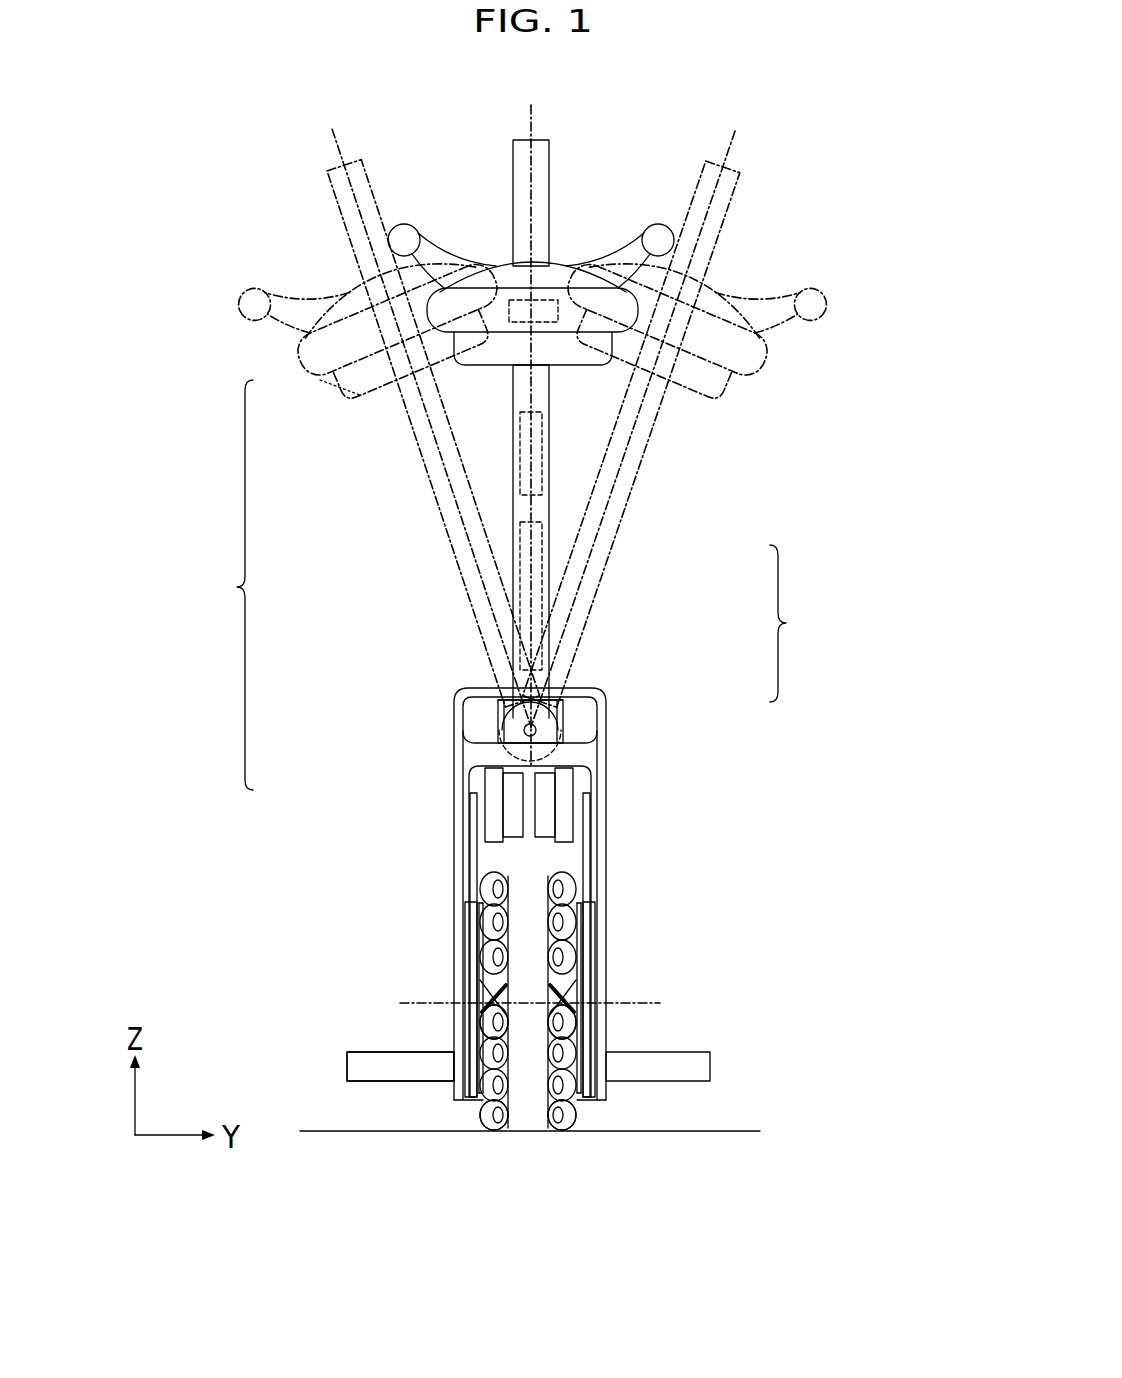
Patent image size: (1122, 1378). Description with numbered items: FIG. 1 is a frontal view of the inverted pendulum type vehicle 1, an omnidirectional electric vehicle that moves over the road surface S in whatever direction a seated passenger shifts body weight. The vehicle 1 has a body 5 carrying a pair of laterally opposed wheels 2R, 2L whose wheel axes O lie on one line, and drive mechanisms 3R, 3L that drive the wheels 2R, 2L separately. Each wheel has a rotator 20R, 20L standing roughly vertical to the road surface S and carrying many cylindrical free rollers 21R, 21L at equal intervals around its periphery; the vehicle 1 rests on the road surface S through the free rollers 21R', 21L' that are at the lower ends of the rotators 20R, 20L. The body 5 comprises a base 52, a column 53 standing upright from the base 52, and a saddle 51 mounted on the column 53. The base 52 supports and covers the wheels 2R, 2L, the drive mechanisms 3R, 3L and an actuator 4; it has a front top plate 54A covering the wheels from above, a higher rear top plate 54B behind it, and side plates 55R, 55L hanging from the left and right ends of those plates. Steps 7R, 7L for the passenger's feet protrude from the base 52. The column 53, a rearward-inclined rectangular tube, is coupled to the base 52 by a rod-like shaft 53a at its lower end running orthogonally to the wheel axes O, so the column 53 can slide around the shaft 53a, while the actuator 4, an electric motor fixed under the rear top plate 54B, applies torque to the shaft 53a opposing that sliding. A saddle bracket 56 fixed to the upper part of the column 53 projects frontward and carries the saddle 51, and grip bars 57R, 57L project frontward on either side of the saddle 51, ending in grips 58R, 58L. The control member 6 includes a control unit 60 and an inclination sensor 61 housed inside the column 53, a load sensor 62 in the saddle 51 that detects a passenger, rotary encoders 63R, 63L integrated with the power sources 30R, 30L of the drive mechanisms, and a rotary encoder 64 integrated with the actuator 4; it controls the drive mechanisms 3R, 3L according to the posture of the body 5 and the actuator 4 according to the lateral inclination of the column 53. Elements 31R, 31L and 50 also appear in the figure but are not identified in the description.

The vehicle 1 is at (236, 175).
The wheel 2R is at (493, 1135).
The wheel 2L is at (566, 1135).
The drive mechanism 3R is at (488, 755).
The drive mechanism 3L is at (578, 760).
The actuator 4 is at (510, 702).
The body 5 is at (614, 791).
The control member 6 is at (234, 585).
The step 7R is at (357, 1067).
The step 7L is at (710, 1066).
The rotator 20R is at (512, 1095).
The rotator 20L is at (546, 1095).
The free rollers 21R is at (419, 1039).
The free rollers 21L is at (637, 1039).
The free roller 21R' is at (442, 1152).
The free roller 21L' is at (611, 1152).
The power source 30R is at (470, 845).
The power source 30L is at (590, 845).
The right motor 31R is at (485, 800).
The left motor 31L is at (577, 800).
The handle unit 50 is at (795, 623).
The saddle 51 is at (564, 262).
The base 52 is at (602, 718).
The column 53 is at (444, 527).
The shaft 53a is at (548, 702).
The front top plate 54A is at (596, 734).
The rear top plate 54B is at (562, 700).
The side plate 55R is at (455, 893).
The side plate 55L is at (605, 893).
The saddle bracket 56 is at (612, 345).
The grip bar 57R is at (447, 262).
The grip bar 57L is at (620, 262).
The grip 58R is at (396, 240).
The grip 58L is at (668, 241).
The control unit 60 is at (508, 587).
The inclination sensor 61 is at (508, 458).
The load sensor 62 is at (346, 385).
The rotary encoder 63R is at (492, 770).
The rotary encoder 63L is at (545, 774).
The rotary encoder 64 is at (508, 700).
The wheel axes O is at (632, 1003).
The road surface S is at (678, 1131).